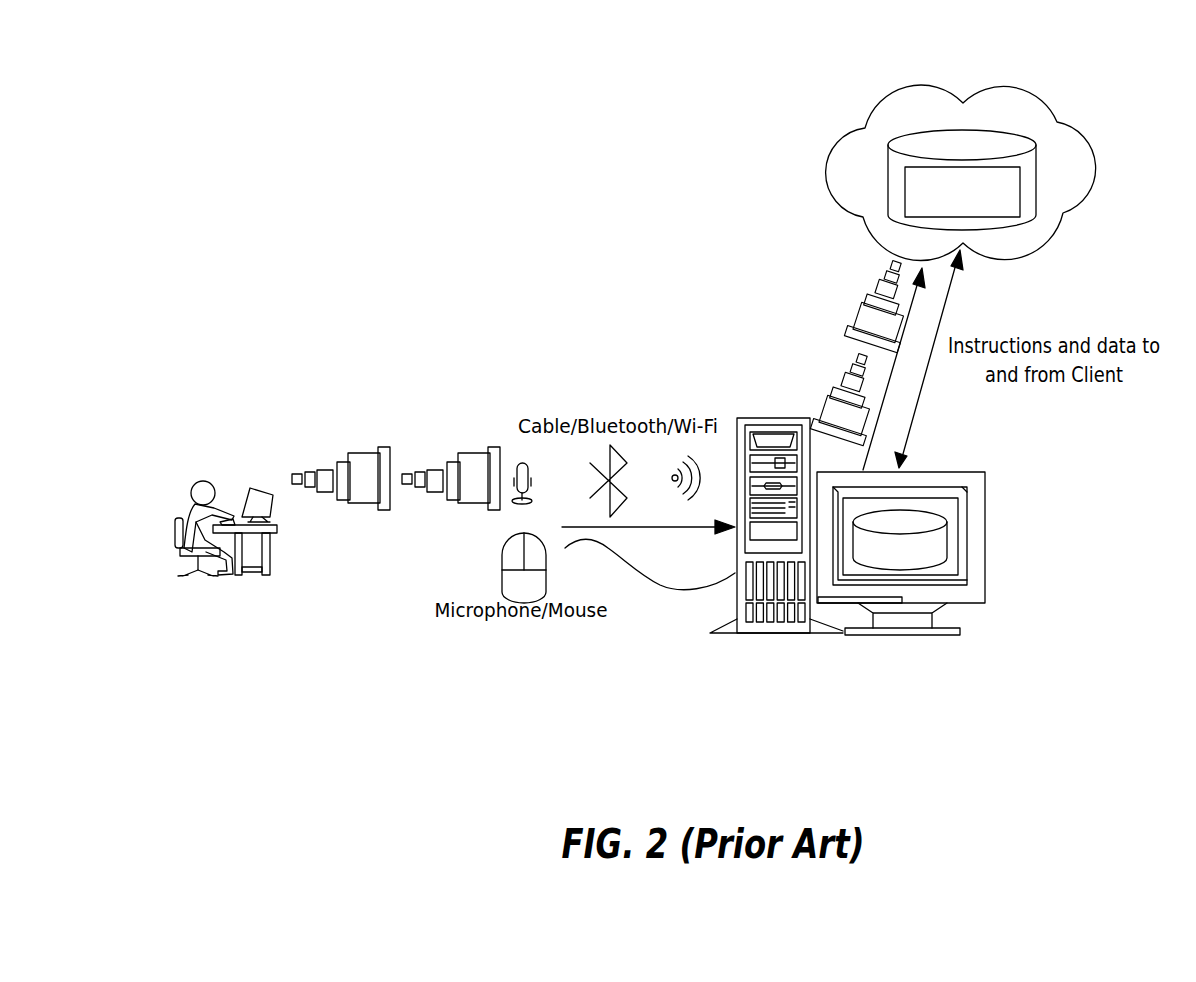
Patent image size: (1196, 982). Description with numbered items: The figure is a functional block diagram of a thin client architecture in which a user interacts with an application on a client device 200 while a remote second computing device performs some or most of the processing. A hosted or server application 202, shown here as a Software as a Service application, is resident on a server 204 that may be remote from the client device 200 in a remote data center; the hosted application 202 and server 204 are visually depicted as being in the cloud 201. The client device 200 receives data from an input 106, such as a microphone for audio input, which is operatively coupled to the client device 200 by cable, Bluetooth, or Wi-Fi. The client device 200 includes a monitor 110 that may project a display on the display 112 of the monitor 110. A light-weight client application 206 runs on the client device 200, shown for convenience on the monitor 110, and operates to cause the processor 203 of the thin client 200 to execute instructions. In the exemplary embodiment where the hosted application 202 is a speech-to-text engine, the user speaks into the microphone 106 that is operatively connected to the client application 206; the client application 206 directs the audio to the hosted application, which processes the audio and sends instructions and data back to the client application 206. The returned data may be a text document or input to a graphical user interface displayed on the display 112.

The input 106 is at (520, 463).
The monitor 110 is at (983, 565).
The display 112 is at (947, 512).
The client device 200 is at (766, 660).
The cloud 201 is at (1057, 122).
The hosted application 202 is at (1020, 187).
The processor 203 is at (747, 635).
The server 204 is at (1037, 157).
The client application 206 is at (938, 555).